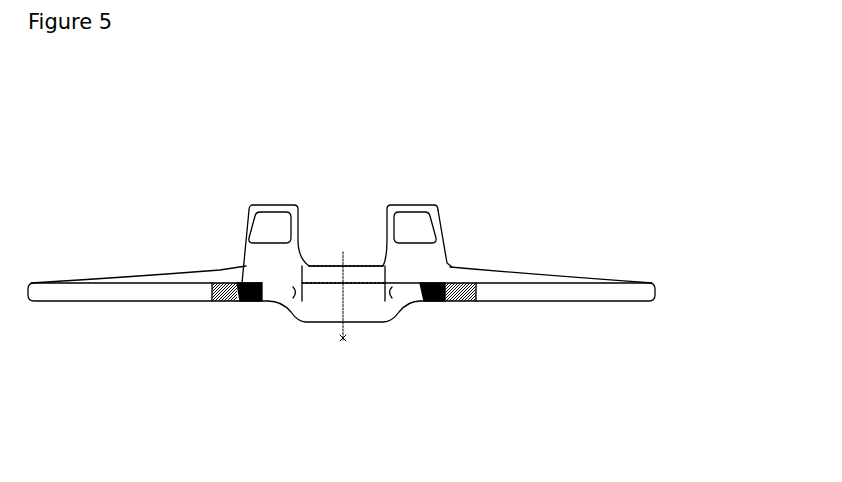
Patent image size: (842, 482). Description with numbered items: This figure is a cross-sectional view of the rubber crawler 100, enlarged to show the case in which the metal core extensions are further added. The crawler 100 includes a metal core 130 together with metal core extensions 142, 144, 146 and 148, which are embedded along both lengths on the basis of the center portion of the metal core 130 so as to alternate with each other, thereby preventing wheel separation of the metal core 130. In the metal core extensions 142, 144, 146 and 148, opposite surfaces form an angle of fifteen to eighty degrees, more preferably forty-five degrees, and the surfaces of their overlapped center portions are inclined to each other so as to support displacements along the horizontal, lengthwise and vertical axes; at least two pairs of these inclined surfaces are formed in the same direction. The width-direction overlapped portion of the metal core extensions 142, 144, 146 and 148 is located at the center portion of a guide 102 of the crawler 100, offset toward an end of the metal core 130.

The rubber crawler 100 is at (106, 254).
The guide 102 is at (416, 222).
The metal core 130 is at (318, 304).
The metal core extension 142 is at (222, 304).
The metal core extension 144 is at (258, 284).
The metal core extension 146 is at (458, 272).
The metal core extension 148 is at (422, 303).